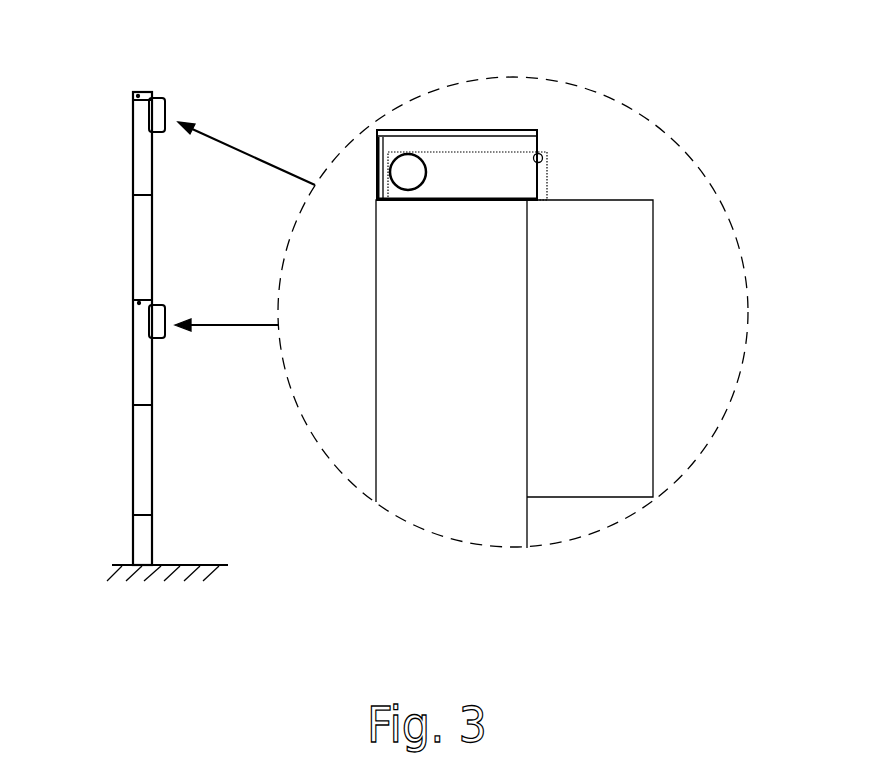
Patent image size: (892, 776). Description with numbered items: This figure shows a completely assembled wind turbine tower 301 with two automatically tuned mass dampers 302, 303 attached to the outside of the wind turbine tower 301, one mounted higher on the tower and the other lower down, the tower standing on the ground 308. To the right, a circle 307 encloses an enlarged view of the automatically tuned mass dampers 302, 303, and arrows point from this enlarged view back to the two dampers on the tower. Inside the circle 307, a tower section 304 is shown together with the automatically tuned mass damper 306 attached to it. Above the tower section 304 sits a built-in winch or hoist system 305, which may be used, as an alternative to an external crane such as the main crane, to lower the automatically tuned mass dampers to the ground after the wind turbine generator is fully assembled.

The pole 301 is at (145, 262).
The lower sensor unit 302 is at (150, 323).
The upper sensor unit 303 is at (150, 103).
The sensor housing 304 is at (388, 248).
The sensor 305 is at (410, 163).
The mounting body 306 is at (628, 397).
The enlarged detail circle 307 is at (650, 122).
The ground 308 is at (200, 568).